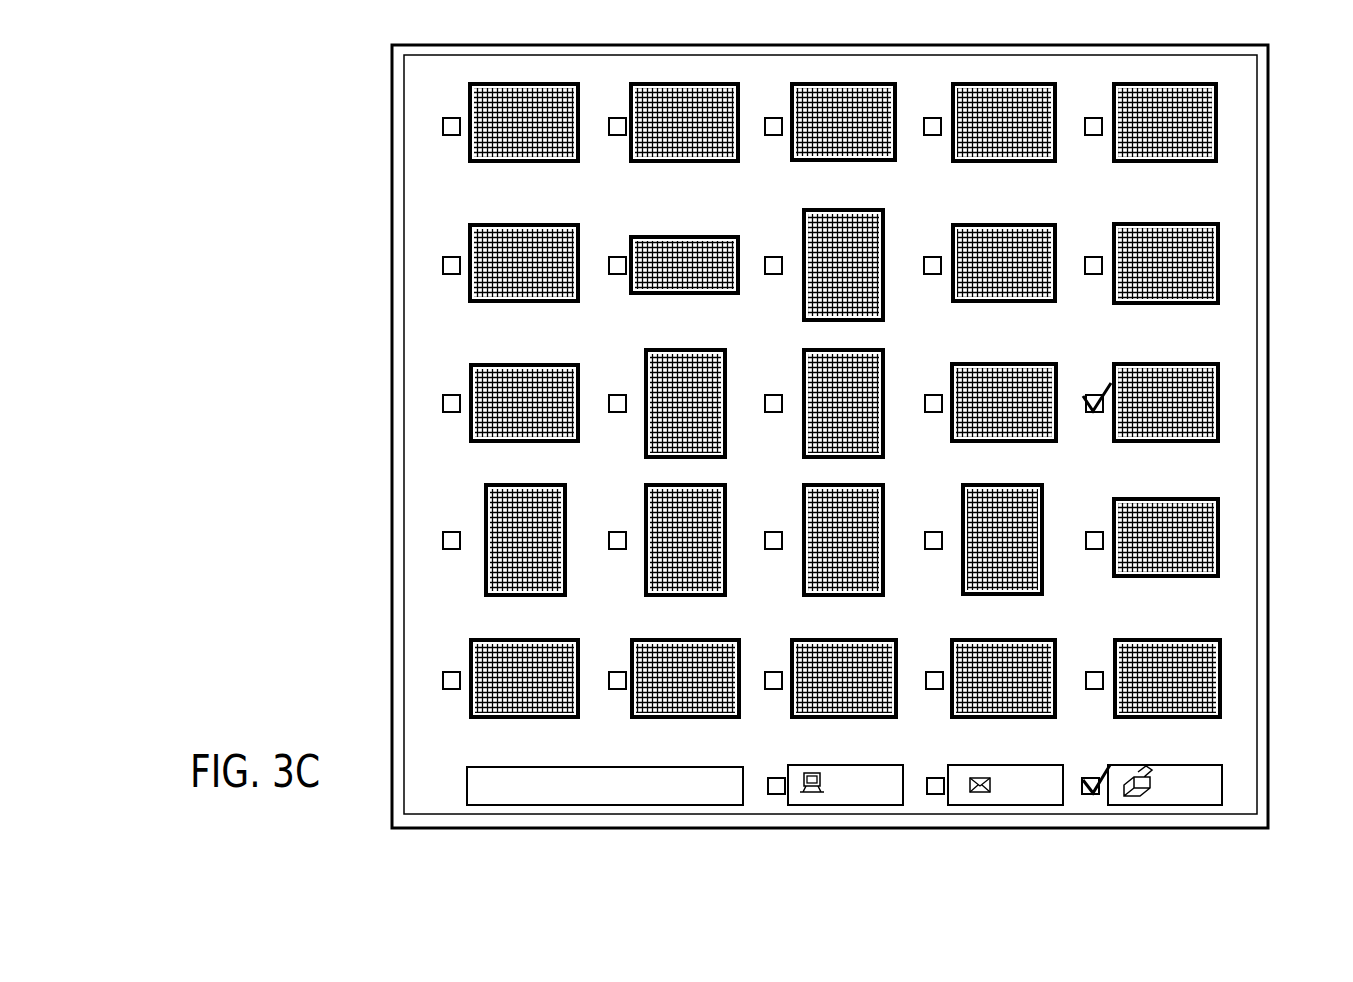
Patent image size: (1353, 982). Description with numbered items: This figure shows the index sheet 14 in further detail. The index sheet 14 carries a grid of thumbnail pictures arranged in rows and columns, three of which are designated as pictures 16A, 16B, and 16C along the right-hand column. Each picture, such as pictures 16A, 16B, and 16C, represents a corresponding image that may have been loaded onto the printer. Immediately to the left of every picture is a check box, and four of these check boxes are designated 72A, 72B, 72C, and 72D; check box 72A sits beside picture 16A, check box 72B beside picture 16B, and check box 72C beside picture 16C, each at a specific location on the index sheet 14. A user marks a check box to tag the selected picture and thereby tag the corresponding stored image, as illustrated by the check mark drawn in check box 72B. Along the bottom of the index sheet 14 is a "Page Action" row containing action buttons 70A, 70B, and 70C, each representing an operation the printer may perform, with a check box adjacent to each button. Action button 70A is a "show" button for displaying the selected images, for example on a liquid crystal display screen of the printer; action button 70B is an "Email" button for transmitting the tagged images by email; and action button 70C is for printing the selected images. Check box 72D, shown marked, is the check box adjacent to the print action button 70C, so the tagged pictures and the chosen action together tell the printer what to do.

The index sheet 14 is at (330, 235).
The thumbnail picture 16A is at (1220, 253).
The thumbnail picture 16B is at (1220, 385).
The thumbnail picture 16C is at (1220, 535).
The check box 72A is at (1095, 256).
The check box 72B is at (1090, 394).
The check box 72C is at (1100, 531).
The check box 72D is at (1110, 765).
The action button 70A is at (890, 805).
The action button 70B is at (1053, 805).
The action button 70C is at (1212, 805).